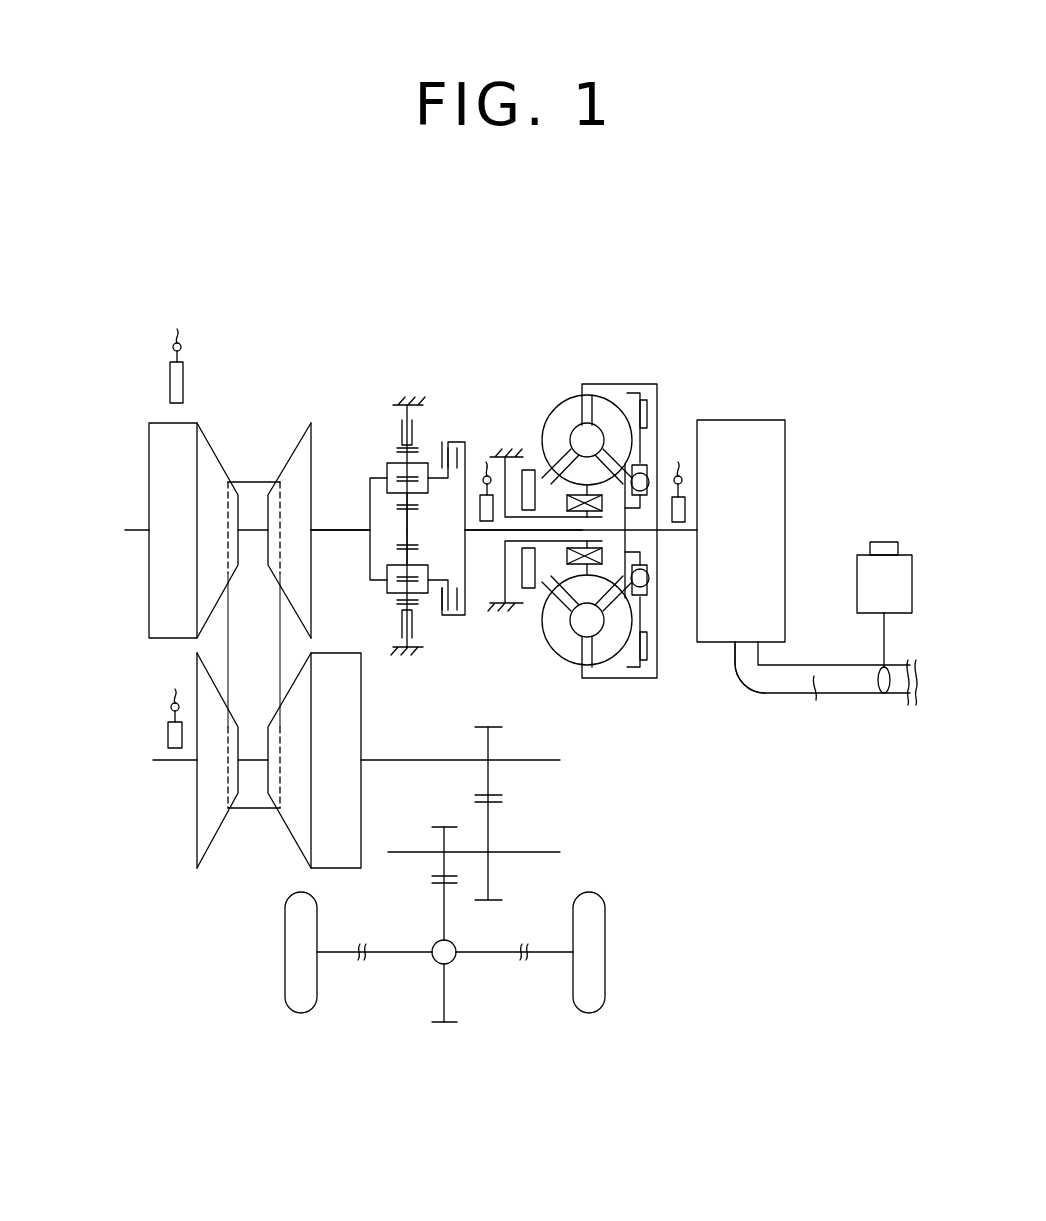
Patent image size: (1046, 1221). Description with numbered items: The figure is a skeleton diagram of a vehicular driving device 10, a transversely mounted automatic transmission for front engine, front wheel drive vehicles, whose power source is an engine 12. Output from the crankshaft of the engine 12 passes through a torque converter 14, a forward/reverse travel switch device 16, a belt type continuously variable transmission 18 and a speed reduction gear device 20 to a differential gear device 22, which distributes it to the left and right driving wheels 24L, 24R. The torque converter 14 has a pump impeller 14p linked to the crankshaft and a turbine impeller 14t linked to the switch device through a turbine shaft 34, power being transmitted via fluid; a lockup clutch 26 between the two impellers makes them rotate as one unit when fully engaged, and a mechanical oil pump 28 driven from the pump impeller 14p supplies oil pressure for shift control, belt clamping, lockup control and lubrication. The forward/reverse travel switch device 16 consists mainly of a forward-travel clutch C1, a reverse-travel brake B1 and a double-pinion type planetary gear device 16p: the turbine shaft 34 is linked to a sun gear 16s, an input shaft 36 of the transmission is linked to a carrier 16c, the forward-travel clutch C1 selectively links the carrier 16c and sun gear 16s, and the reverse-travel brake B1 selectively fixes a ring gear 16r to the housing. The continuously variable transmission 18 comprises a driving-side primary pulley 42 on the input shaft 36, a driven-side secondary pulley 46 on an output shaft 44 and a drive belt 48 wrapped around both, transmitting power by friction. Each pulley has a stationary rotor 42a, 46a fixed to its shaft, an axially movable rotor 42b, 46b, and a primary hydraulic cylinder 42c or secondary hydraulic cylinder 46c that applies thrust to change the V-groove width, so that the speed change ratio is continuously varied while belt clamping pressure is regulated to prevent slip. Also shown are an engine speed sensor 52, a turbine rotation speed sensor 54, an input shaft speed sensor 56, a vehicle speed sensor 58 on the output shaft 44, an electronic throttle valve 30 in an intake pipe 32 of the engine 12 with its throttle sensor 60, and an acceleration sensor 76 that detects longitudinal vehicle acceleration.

The vehicular driving device 10 is at (587, 293).
The engine 12 is at (773, 497).
The torque converter 14 is at (593, 519).
The pump impeller 14p is at (560, 640).
The turbine impeller 14t is at (605, 655).
The forward/reverse travel switch device 16 is at (394, 467).
The carrier 16c is at (387, 468).
The double-pinion type planetary gear device 16p is at (373, 385).
The ring gear 16r is at (400, 617).
The sun gear 16s is at (397, 537).
The belt type continuously variable transmission 18 is at (274, 666).
The speed reduction gear device 20 is at (553, 820).
The differential gear device 22 is at (437, 960).
The left driving wheel 24L is at (297, 960).
The right driving wheel 24R is at (595, 960).
The lockup clutch 26 is at (645, 410).
The mechanical oil pump 28 is at (532, 470).
The electronic throttle valve 30 is at (826, 696).
The intake pipe 32 is at (817, 693).
The turbine shaft 34 is at (473, 547).
The input shaft 36 is at (330, 527).
The driving-side pulley (primary pulley) 42 is at (208, 540).
The stationary rotor 42a is at (298, 467).
The movable rotor 42b is at (208, 460).
The driving-side hydraulic cylinder (primary hydraulic cylinder) 42c is at (157, 455).
The output shaft 44 is at (412, 760).
The driven-side pulley (secondary pulley) 46 is at (274, 785).
The stationary rotor 46a is at (207, 815).
The movable rotor 46b is at (297, 812).
The driven-side hydraulic cylinder (secondary hydraulic cylinder) 46c is at (345, 728).
The drive belt 48 is at (257, 480).
The engine speed sensor 52 is at (677, 495).
The turbine rotation speed sensor 54 is at (478, 497).
The input shaft speed sensor 56 is at (183, 380).
The vehicle speed sensor (output shaft speed sensor) 58 is at (168, 735).
The throttle sensor 60 is at (882, 547).
The acceleration sensor 76 is at (866, 585).
The reverse-travel brake B1 is at (393, 436).
The forward-travel clutch C1 is at (449, 515).